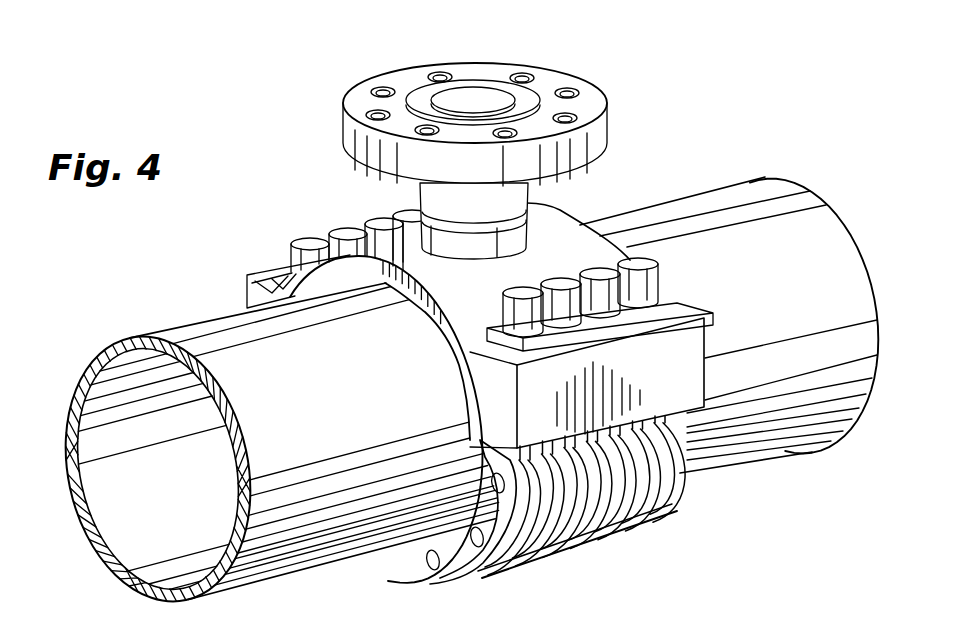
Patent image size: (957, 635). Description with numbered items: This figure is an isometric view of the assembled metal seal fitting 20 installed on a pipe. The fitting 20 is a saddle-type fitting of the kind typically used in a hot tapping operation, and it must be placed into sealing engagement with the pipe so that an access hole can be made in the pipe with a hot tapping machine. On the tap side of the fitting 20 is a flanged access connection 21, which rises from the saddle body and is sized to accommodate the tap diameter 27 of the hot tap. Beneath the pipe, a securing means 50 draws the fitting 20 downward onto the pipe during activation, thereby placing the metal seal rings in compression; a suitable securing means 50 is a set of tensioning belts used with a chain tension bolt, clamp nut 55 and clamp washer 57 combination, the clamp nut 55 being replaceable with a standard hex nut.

The metal seal fitting 20 is at (566, 209).
The flanged access connection 21 is at (437, 197).
The tap diameter 27 is at (456, 108).
The securing means 50 is at (697, 512).
The clamp nut 55 is at (657, 274).
The clamp washer 57 is at (682, 303).